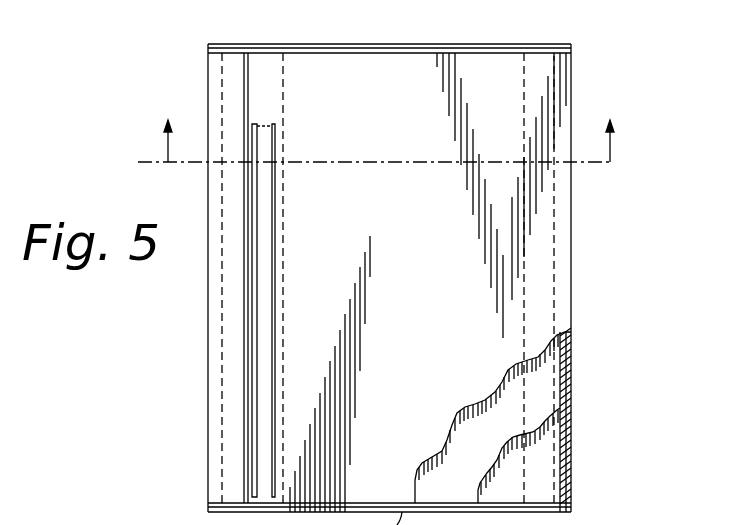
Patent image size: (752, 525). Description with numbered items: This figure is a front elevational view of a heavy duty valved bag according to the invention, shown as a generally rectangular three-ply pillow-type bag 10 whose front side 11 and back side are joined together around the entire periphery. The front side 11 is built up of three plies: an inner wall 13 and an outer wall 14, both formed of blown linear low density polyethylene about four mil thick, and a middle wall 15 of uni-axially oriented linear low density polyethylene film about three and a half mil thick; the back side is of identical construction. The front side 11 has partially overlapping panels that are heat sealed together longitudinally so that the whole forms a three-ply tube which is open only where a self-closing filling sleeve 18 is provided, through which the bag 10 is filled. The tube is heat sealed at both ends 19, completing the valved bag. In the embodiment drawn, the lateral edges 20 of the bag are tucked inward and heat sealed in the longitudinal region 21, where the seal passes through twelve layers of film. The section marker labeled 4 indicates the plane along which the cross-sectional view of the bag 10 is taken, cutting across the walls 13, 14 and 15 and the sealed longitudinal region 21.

The pillow-type bag 10 is at (597, 261).
The front side 11 is at (426, 254).
The inner wall 13 is at (540, 463).
The outer wall 14 is at (545, 318).
The middle wall 15 is at (540, 380).
The self-closing filling sleeve 18 is at (262, 84).
The ends 19 is at (460, 44).
The lateral edges 20 is at (207, 388).
The longitudinal region 21 is at (233, 283).
The section line 4- 4 is at (384, 155).